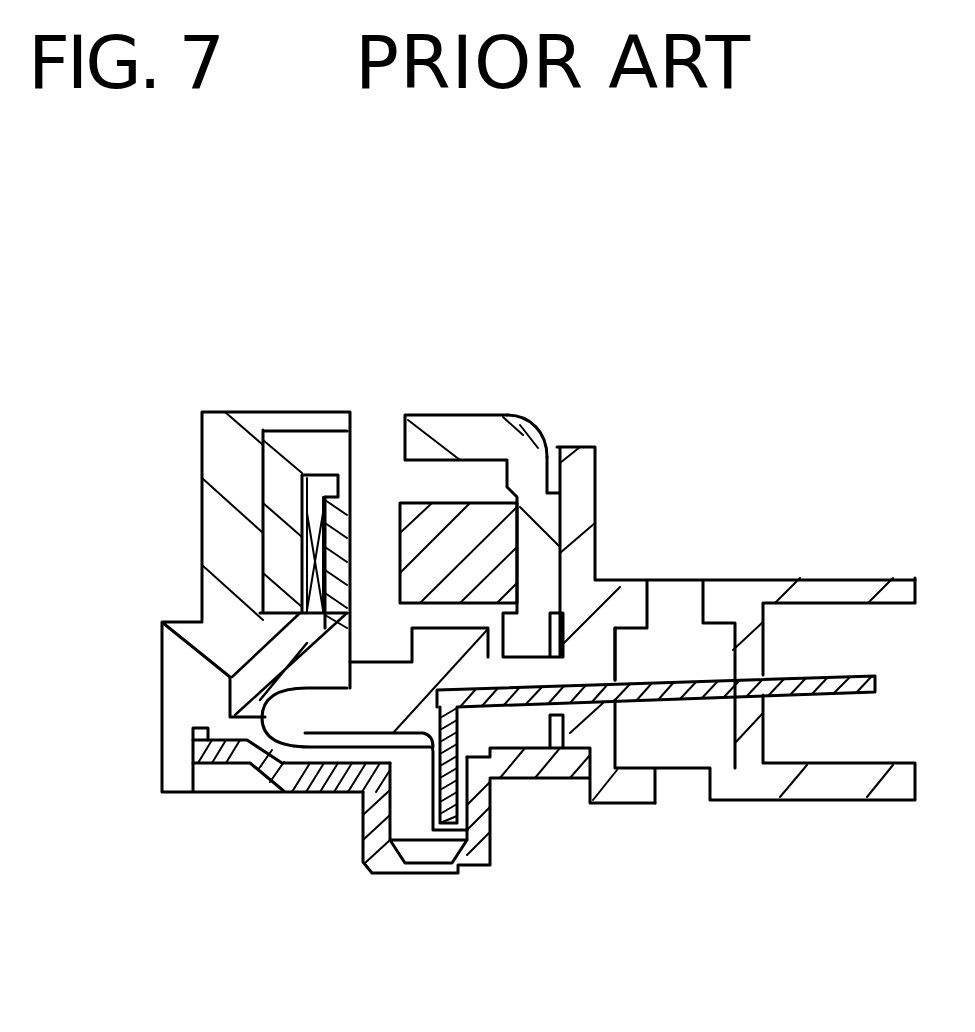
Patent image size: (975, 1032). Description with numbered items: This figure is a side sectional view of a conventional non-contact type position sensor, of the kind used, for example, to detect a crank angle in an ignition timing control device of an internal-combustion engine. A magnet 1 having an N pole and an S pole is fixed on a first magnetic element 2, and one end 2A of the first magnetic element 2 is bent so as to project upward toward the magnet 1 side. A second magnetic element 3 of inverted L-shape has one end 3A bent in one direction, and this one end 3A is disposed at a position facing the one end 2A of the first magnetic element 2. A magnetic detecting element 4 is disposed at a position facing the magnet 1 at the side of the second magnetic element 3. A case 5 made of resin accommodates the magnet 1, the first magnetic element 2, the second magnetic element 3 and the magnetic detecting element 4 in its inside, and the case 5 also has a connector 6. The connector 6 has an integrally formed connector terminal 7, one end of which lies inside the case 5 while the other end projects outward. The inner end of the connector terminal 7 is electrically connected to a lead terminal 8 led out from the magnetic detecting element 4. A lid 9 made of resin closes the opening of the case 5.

The magnet 1 is at (490, 557).
The first magnetic element 2 is at (530, 417).
The one end of first magnetic element 2A is at (418, 420).
The second magnetic element 3 is at (307, 450).
The one end of second magnetic element 3A is at (340, 452).
The magnetic detecting element 4 is at (307, 548).
The case 5 is at (200, 708).
The connector 6 is at (795, 765).
The connector terminal 7 is at (827, 695).
The lead terminal 8 is at (298, 780).
The lid 9 is at (402, 880).